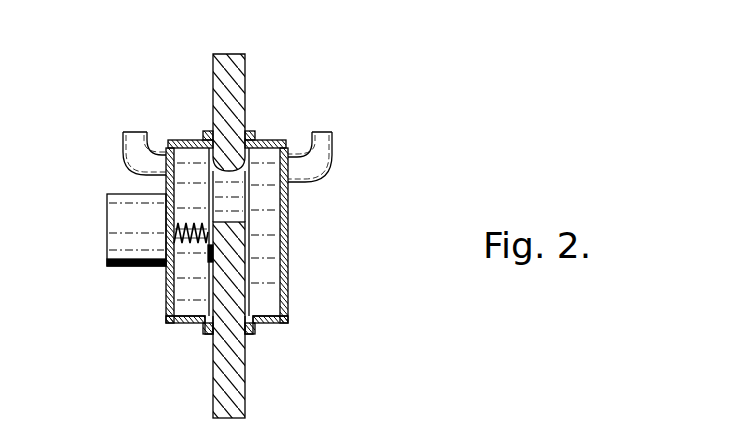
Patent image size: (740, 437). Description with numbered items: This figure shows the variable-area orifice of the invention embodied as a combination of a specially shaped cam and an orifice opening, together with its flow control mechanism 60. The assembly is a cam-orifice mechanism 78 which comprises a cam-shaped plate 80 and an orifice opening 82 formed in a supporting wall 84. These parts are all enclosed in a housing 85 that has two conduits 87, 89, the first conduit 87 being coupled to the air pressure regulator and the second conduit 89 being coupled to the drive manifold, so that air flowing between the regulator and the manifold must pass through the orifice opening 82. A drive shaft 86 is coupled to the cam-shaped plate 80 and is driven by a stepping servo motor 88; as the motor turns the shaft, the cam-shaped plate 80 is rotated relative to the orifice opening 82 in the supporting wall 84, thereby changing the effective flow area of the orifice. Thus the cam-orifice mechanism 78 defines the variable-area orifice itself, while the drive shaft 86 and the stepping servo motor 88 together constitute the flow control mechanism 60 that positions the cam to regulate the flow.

The flow control mechanism 60 is at (124, 278).
The cam-orifice mechanism 78 is at (154, 114).
The cam-shaped plate 80 is at (204, 141).
The orifice opening 82 is at (248, 167).
The supporting wall 84 is at (250, 55).
The housing 85 is at (288, 323).
The drive shaft 86 is at (168, 270).
The conduit 87 is at (123, 131).
The stepping servo motor 88 is at (115, 213).
The conduit 89 is at (332, 132).